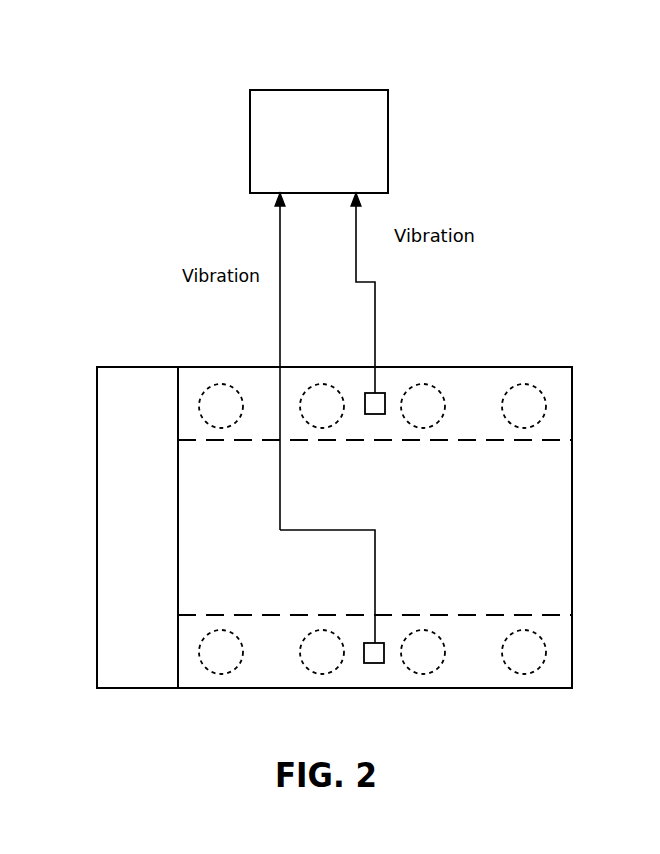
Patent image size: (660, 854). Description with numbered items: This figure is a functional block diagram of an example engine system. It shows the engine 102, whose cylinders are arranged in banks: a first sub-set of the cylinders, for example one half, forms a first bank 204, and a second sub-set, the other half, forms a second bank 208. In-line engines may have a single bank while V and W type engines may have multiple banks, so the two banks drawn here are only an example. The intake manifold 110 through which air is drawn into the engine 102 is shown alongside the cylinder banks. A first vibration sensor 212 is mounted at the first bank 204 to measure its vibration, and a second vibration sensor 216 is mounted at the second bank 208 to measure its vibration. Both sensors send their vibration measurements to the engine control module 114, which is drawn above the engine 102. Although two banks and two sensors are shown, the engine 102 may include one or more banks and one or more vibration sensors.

The engine control module 114 is at (319, 90).
The engine 102 is at (572, 459).
The intake manifold 110 is at (97, 615).
The second bank 208 is at (400, 443).
The first bank 204 is at (474, 615).
The second vibration sensor 216 is at (382, 393).
The first vibration sensor 212 is at (368, 663).